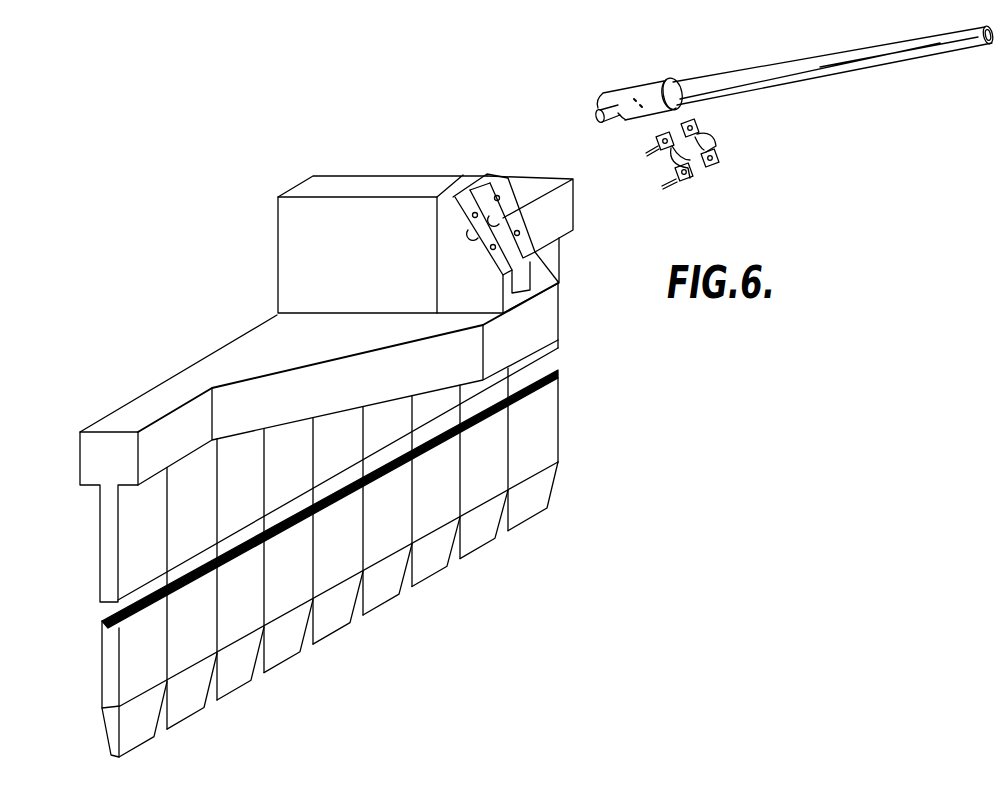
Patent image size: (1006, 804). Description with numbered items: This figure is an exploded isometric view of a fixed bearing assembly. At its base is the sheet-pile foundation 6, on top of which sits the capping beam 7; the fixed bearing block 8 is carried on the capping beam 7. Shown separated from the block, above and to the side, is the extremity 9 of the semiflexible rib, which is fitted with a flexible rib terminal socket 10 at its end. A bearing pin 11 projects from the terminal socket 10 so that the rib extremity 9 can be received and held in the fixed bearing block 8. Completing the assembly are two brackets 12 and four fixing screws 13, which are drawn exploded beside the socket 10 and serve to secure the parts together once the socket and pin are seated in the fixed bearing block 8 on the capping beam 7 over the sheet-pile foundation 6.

The sheet-pile foundation 6 is at (98, 543).
The capping beam 7 is at (255, 328).
The fixed bearing block 8 is at (510, 182).
The extremity of the semiflexible rib 9 is at (760, 38).
The flexible rib terminal socket 10 is at (652, 118).
The bearing pin 11 is at (602, 102).
The brackets 12 is at (702, 178).
The fixing screws 13 is at (700, 123).